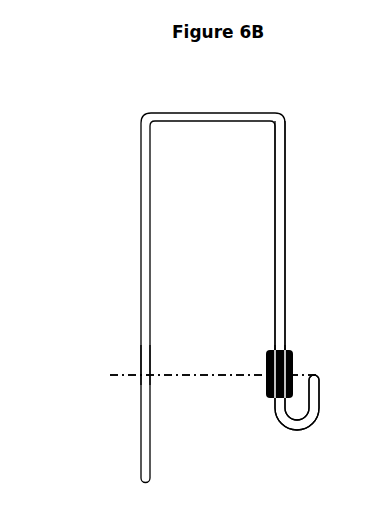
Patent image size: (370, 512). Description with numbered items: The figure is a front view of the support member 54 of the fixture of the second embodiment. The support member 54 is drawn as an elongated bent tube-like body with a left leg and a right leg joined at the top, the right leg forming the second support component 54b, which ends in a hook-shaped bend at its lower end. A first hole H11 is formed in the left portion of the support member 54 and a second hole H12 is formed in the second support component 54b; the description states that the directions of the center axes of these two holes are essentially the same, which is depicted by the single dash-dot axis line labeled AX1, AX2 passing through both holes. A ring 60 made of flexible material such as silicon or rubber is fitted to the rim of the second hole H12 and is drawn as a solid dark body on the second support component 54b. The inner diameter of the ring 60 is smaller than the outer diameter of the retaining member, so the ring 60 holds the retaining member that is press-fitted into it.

The support member 54 is at (131, 100).
The second support component 54b is at (286, 199).
The axis AX1 is at (177, 376).
The axis AX2 is at (177, 376).
The first hole H11 is at (143, 350).
The second hole H12 is at (280, 350).
The ring 60 is at (265, 391).